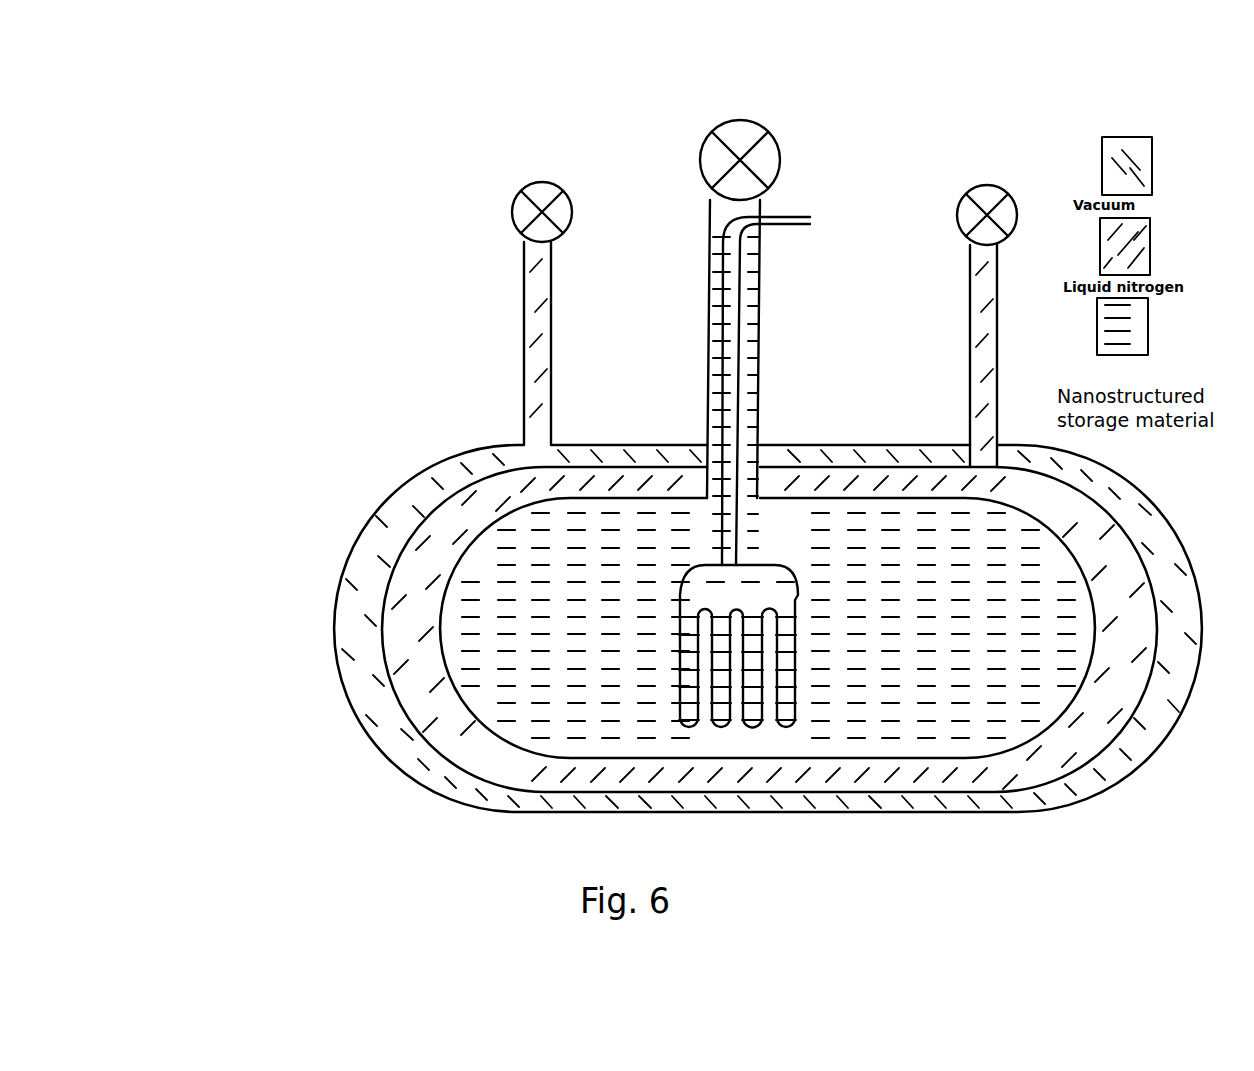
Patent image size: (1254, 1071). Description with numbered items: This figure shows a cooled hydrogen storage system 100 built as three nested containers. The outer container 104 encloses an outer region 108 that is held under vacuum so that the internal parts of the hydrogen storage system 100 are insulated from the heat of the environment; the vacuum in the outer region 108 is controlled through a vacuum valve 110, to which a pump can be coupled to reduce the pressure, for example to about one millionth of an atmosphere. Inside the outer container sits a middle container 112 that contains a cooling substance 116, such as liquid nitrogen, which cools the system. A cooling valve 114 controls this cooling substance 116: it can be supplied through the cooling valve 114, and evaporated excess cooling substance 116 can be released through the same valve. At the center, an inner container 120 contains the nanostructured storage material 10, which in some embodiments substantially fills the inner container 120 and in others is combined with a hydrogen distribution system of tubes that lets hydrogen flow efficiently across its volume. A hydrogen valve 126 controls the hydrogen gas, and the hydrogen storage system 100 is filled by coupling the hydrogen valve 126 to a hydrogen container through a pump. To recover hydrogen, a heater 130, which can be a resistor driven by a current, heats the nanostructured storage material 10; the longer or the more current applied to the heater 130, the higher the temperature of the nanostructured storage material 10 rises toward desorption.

The hydrogen storage system 100 is at (340, 107).
The outer container 104 is at (388, 498).
The outer region 108 is at (373, 547).
The middle container 112 is at (383, 597).
The cooling substance 116 is at (400, 648).
The inner container 120 is at (443, 681).
The nanostructured storage material 10 is at (482, 695).
The vacuum valve 110 is at (510, 214).
The hydrogen valve 126 is at (745, 120).
The cooling valve 114 is at (1000, 185).
The heater 130 is at (773, 562).